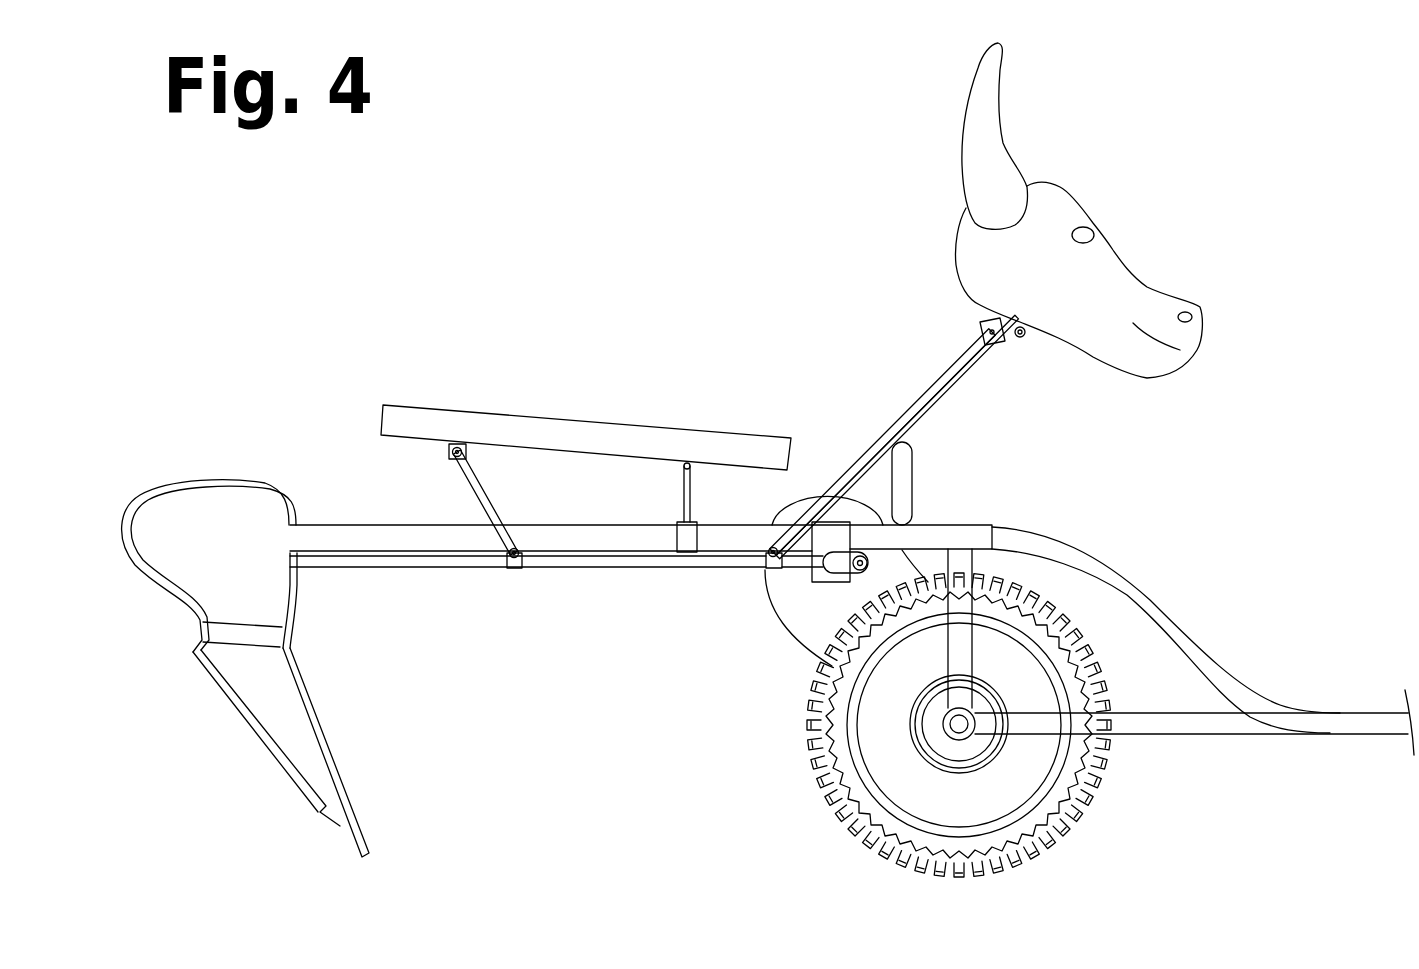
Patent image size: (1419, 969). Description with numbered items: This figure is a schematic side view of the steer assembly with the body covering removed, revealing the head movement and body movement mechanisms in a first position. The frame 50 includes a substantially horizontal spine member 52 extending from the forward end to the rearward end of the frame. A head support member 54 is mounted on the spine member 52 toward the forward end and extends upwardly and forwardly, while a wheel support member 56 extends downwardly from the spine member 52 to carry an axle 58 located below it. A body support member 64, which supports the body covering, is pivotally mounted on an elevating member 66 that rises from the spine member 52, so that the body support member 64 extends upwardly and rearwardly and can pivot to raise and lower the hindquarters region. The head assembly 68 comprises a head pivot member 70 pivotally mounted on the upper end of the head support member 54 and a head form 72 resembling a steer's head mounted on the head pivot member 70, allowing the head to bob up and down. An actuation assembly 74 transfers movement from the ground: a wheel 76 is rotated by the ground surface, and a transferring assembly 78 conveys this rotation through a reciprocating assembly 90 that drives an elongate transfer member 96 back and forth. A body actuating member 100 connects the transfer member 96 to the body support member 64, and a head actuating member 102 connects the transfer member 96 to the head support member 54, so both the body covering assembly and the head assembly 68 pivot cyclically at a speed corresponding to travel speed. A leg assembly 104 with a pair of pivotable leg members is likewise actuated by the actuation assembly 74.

The frame 50 is at (965, 510).
The spine member 52 is at (337, 530).
The head support member 54 is at (937, 390).
The wheel support member 56 is at (957, 650).
The axle 58 is at (957, 726).
The body support member 64 is at (515, 428).
The elevating member 66 is at (685, 491).
The head assembly 68 is at (1098, 385).
The head pivot member 70 is at (985, 322).
The head form 72 is at (1050, 205).
The actuation assembly 74 is at (760, 627).
The wheel 76 is at (1088, 810).
The transferring assembly 78 is at (565, 596).
The reciprocating assembly 90 is at (510, 598).
The elongate transfer member 96 is at (401, 570).
The body actuating member 100 is at (476, 497).
The head actuating member 102 is at (852, 467).
The leg assembly 104 is at (224, 731).